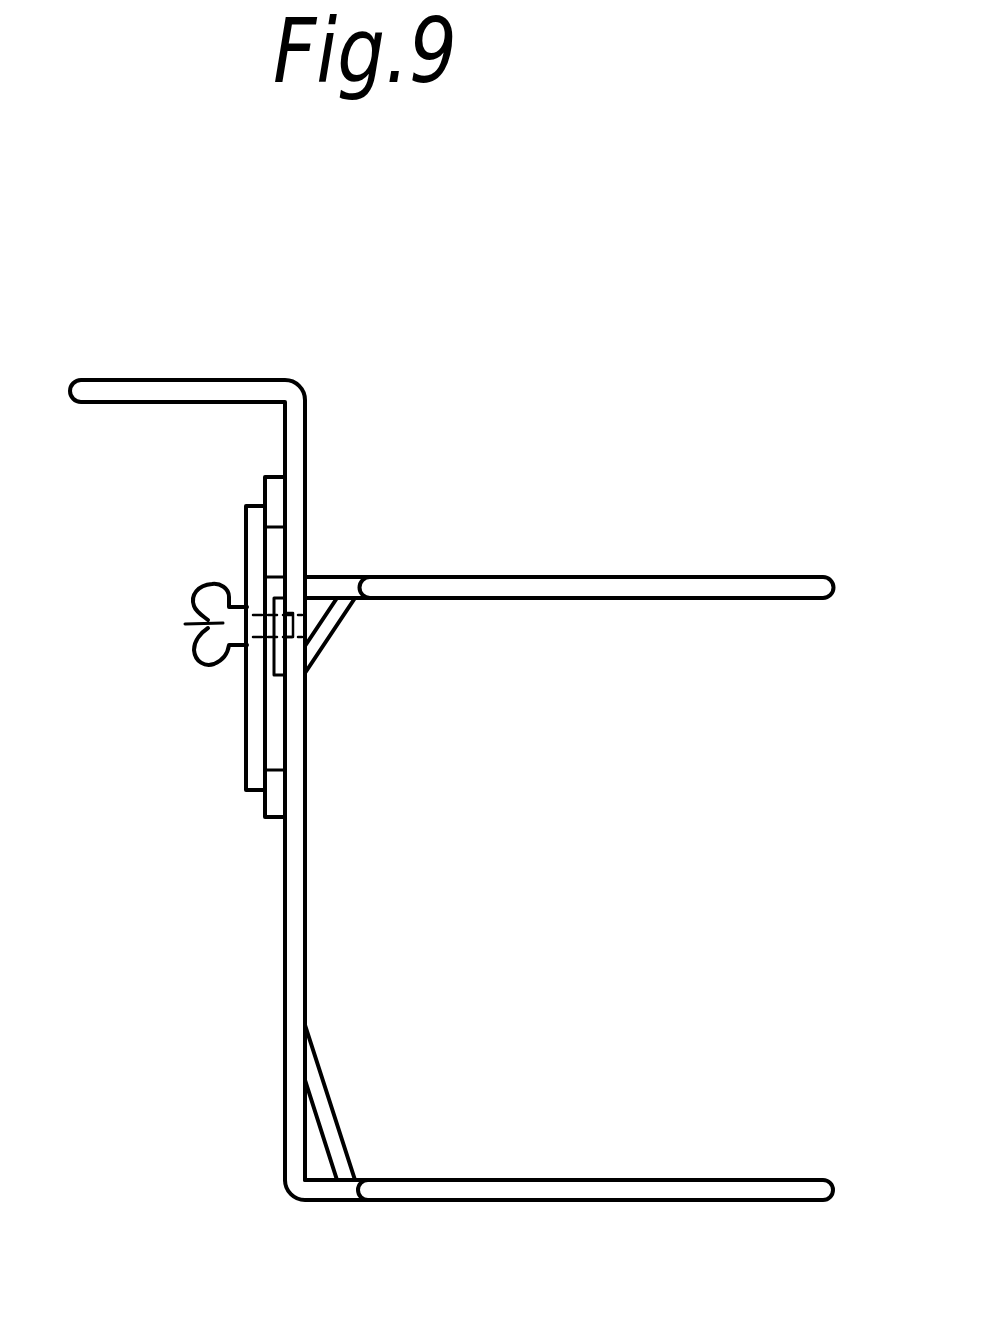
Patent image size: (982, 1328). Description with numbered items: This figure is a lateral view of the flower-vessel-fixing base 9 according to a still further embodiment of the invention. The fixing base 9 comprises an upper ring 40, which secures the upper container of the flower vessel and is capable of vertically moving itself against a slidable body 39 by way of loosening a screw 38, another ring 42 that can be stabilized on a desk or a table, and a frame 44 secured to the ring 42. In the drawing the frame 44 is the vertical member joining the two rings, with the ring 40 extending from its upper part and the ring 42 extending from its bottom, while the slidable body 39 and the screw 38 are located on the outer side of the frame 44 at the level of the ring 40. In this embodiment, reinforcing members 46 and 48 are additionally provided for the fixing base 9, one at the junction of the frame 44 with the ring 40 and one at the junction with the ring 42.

The flower-vessel-fixing base 9 is at (140, 287).
The screw 38 is at (220, 624).
The slidable body 39 is at (253, 743).
The ring 40 is at (622, 587).
The ring 42 is at (627, 1187).
The frame 44 is at (290, 893).
The reinforcing member 46 is at (327, 625).
The reinforcing member 48 is at (327, 1115).